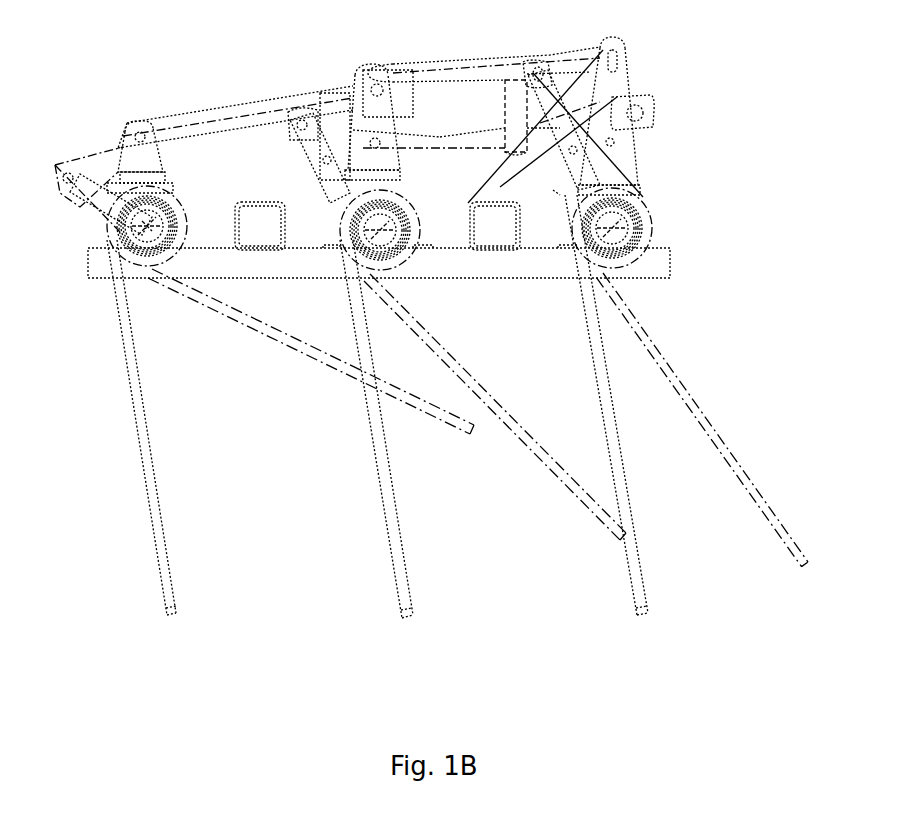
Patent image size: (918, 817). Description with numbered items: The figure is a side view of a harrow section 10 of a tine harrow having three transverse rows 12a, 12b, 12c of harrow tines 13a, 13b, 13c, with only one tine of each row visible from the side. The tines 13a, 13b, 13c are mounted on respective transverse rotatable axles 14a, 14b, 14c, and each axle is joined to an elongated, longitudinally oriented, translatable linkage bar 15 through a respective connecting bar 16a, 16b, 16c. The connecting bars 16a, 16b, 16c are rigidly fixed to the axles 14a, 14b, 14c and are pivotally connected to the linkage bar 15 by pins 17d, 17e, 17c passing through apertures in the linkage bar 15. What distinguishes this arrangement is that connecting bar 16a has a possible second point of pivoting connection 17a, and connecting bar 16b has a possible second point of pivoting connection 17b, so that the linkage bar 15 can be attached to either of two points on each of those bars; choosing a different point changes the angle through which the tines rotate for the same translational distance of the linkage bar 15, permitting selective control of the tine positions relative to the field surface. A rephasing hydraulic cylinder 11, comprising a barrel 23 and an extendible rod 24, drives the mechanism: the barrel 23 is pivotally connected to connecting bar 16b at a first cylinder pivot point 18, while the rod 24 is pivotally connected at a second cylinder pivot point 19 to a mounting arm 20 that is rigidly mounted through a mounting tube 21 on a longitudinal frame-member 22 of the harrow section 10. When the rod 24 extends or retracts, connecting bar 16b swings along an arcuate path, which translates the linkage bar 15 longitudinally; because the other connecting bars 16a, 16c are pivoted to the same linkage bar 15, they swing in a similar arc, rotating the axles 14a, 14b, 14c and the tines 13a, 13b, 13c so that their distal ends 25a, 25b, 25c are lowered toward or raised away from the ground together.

The harrow section 10 is at (735, 260).
The hydraulic cylinder 11 is at (540, 44).
The transverse row 12a is at (619, 230).
The transverse row 12b is at (379, 233).
The transverse row 12c is at (142, 225).
The harrow tine 13a is at (615, 460).
The harrow tine 13b is at (387, 482).
The harrow tine 13c is at (137, 385).
The transverse rotatable axle 14a is at (635, 208).
The transverse rotatable axle 14b is at (398, 222).
The transverse rotatable axle 14c is at (118, 220).
The linkage bar 15 is at (192, 125).
The connecting bar 16a is at (625, 172).
The connecting bar 16b is at (382, 122).
The connecting bar 16c is at (130, 160).
The second point of pivoting connection 17a is at (612, 142).
The second point of pivoting connection 17b is at (371, 139).
The pin 17c is at (140, 130).
The pin 17d is at (613, 62).
The pin 17e is at (376, 95).
The first cylinder pivot point 18 is at (380, 86).
The second cylinder pivot point 19 is at (640, 112).
The mounting arm 20 is at (553, 190).
The mounting tube 21 is at (497, 250).
The longitudinal frame-member 22 is at (655, 270).
The barrel 23 is at (434, 67).
The extendible rod 24 is at (610, 103).
The distal end 25a is at (642, 616).
The distal end 25b is at (411, 616).
The distal end 25c is at (176, 616).